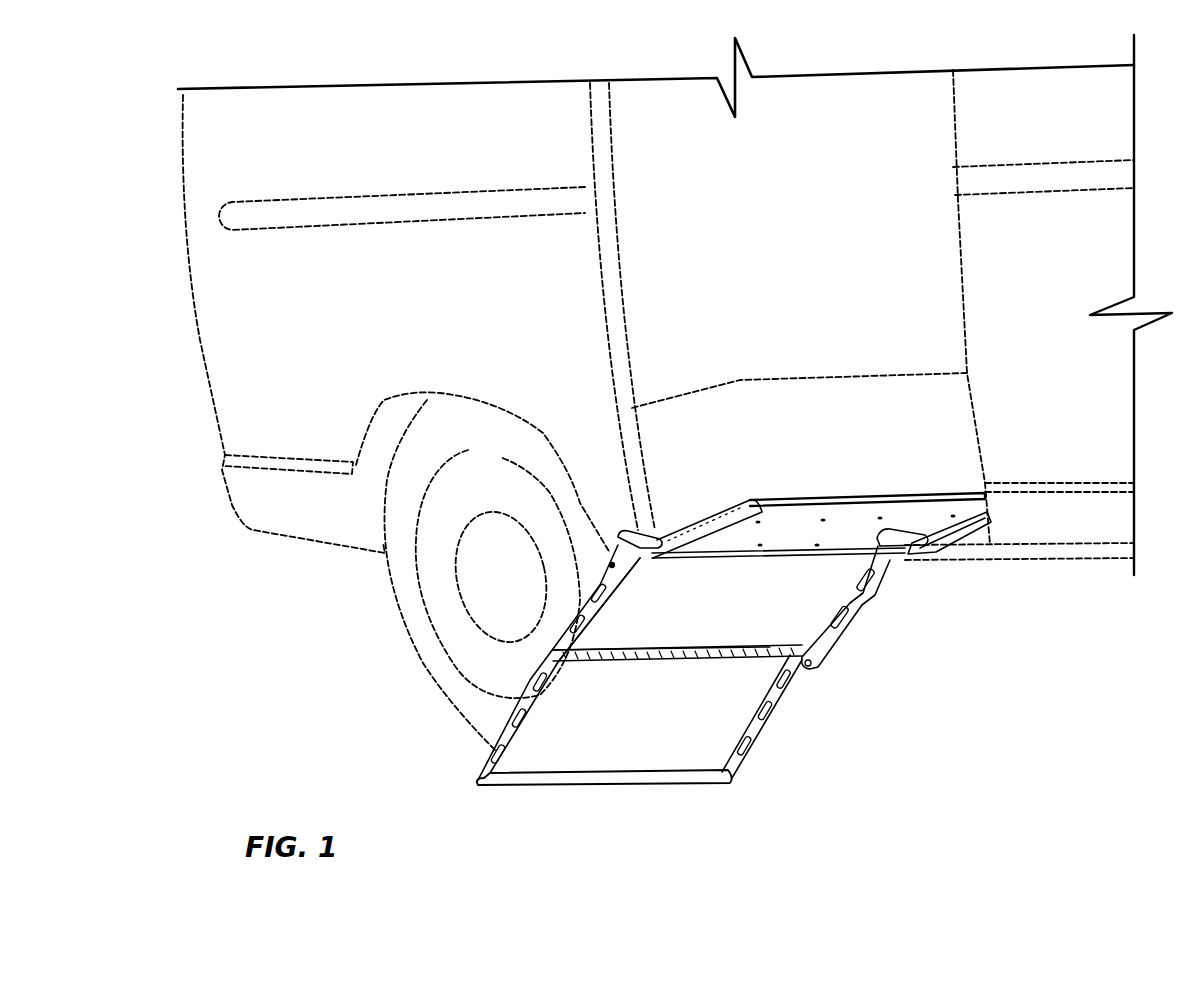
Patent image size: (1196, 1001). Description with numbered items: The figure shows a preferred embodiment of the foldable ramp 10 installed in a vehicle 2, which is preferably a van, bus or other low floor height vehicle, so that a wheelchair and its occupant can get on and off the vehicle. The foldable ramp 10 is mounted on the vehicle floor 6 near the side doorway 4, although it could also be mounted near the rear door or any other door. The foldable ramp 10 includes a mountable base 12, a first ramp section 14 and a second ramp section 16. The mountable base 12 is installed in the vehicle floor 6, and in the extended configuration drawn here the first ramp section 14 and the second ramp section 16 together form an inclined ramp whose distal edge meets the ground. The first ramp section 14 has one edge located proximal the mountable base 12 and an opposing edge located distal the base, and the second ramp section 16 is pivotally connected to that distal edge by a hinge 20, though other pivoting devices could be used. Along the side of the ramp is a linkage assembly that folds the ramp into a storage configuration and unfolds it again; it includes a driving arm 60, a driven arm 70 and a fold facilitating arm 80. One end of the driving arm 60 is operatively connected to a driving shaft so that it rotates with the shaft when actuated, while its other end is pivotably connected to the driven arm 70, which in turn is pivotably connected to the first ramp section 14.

The vehicle 2 is at (1082, 573).
The side doorway 4 is at (612, 240).
The vehicle floor 6 is at (680, 525).
The foldable ramp 10 is at (760, 622).
The mountable base 12 is at (850, 515).
The first ramp section 14 is at (745, 612).
The second ramp section 16 is at (655, 729).
The hinge 20 is at (760, 647).
The driving arm 60 is at (967, 510).
The driven arm 70 is at (875, 563).
The fold facilitating arm 80 is at (856, 649).